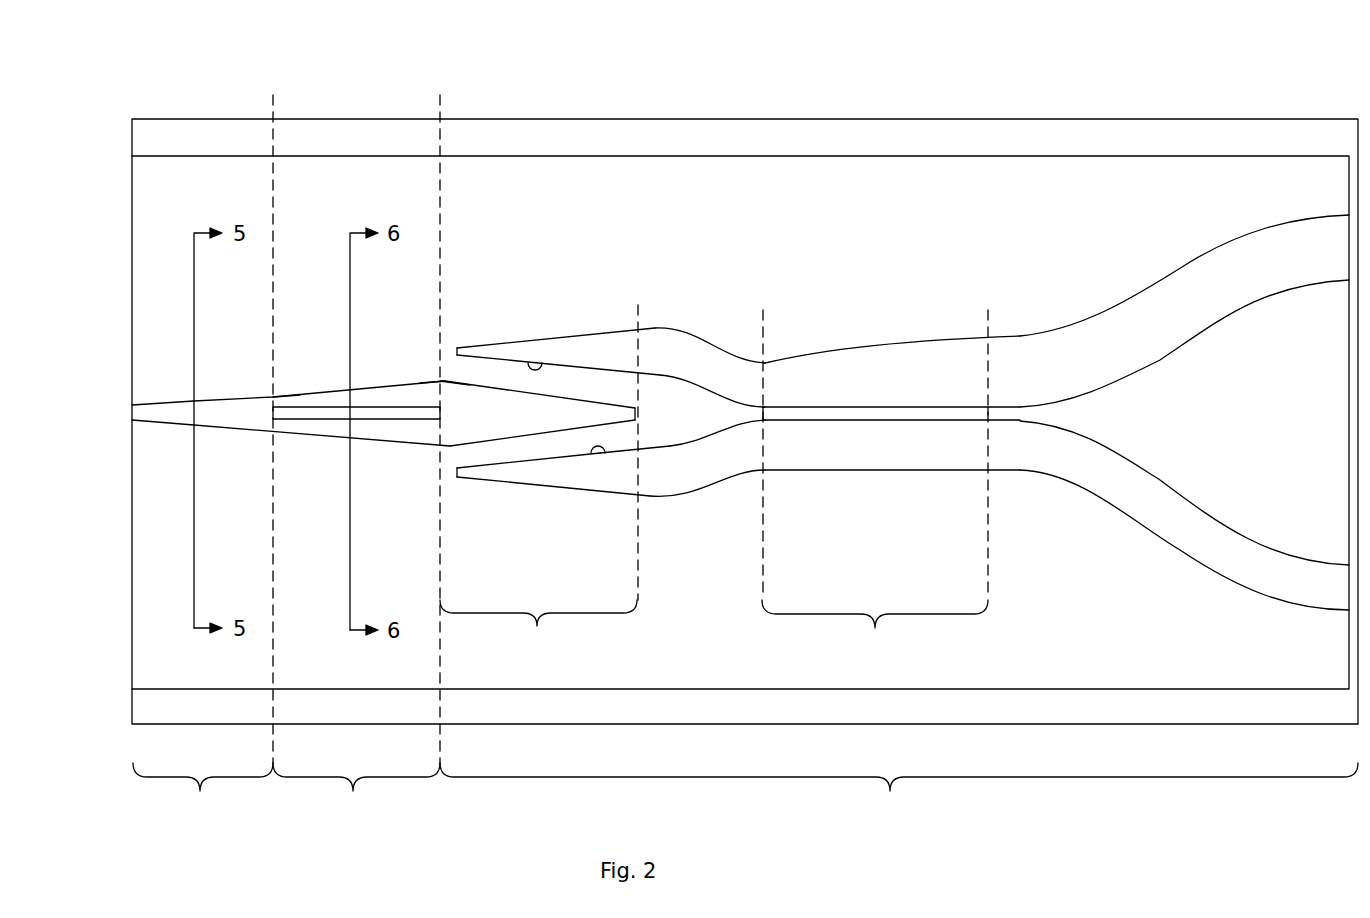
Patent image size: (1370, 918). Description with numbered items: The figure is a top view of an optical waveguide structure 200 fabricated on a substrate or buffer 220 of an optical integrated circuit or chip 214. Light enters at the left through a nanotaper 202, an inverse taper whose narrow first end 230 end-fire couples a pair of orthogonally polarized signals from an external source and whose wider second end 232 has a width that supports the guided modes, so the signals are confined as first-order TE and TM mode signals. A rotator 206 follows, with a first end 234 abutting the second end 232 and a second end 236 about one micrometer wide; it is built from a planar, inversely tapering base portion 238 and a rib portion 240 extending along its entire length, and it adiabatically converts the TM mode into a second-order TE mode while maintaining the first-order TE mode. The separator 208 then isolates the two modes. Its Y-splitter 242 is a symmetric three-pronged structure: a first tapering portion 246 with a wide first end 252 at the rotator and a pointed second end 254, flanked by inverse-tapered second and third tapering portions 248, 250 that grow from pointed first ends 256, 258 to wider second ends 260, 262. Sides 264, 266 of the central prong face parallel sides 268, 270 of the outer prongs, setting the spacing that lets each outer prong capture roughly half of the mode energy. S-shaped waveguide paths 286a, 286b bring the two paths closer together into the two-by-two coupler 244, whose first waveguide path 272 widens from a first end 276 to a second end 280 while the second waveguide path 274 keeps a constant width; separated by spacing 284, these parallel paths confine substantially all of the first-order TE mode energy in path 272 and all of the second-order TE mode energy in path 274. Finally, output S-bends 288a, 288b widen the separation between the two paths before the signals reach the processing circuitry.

The optical waveguide structure 200 is at (637, 155).
The optical integrated circuit or chip 214 is at (778, 120).
The substrate or buffer 220 is at (920, 192).
The nanotaper 202 is at (203, 798).
The rotator 206 is at (356, 798).
The separator 208 is at (899, 798).
The first end 230 is at (132, 415).
The second end 232 is at (273, 400).
The first end 234 is at (280, 398).
The second end 236 is at (440, 392).
The base portion 238 is at (318, 432).
The rib portion 240 is at (400, 418).
The Y-splitter 242 is at (538, 630).
The two-by-two coupler 244 is at (875, 631).
The first tapering portion 246 is at (531, 452).
The second tapering portion 248 is at (570, 352).
The third tapering portion 250 is at (573, 472).
The first end 252 is at (440, 390).
The second end 254 is at (640, 410).
The first end 256 is at (457, 352).
The first end 258 is at (457, 473).
The second end 260 is at (637, 345).
The second end 262 is at (637, 463).
The side 264 is at (502, 387).
The opposing side 266 is at (500, 440).
The side 268 is at (530, 356).
The side 270 is at (603, 455).
The first waveguide path 272 is at (883, 382).
The second waveguide path 274 is at (870, 453).
The first end 276 is at (772, 408).
The second end 280 is at (983, 408).
The spacing 284 is at (857, 415).
The waveguide path 286a is at (702, 368).
The waveguide path 286b is at (707, 457).
The S-bend 288a is at (1120, 330).
The S-bend 288b is at (1122, 497).